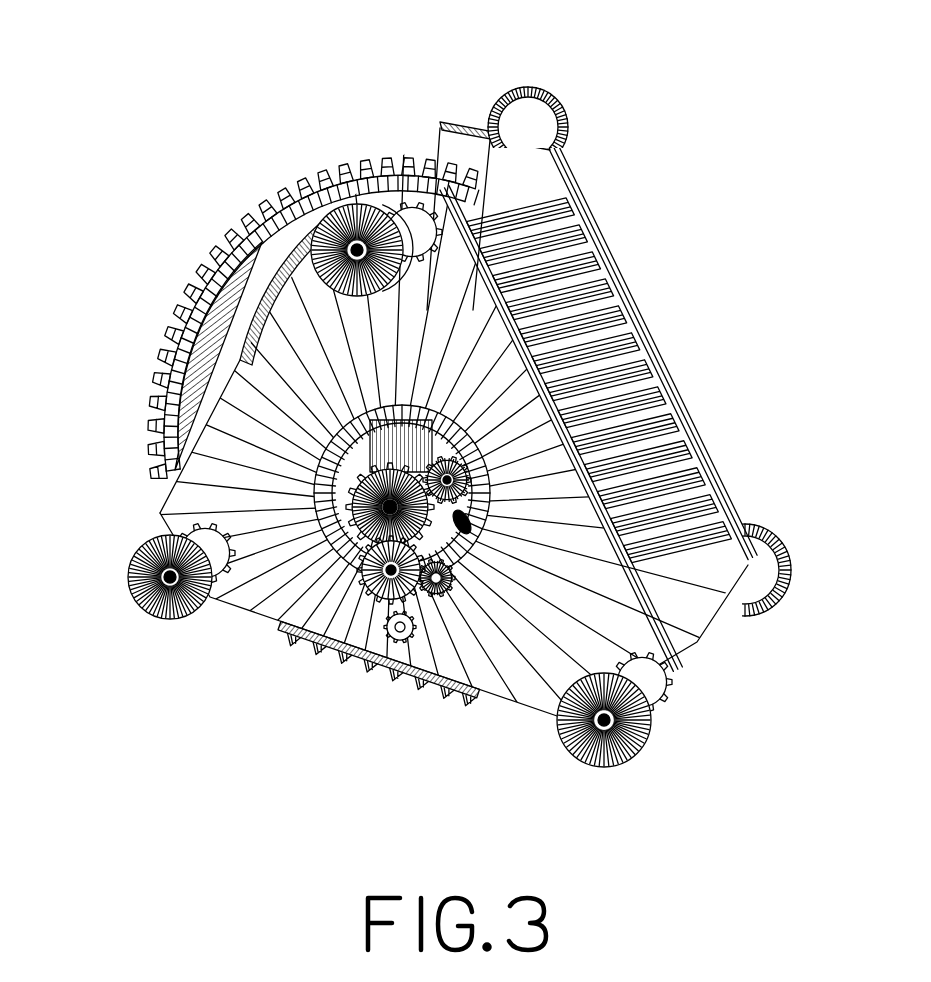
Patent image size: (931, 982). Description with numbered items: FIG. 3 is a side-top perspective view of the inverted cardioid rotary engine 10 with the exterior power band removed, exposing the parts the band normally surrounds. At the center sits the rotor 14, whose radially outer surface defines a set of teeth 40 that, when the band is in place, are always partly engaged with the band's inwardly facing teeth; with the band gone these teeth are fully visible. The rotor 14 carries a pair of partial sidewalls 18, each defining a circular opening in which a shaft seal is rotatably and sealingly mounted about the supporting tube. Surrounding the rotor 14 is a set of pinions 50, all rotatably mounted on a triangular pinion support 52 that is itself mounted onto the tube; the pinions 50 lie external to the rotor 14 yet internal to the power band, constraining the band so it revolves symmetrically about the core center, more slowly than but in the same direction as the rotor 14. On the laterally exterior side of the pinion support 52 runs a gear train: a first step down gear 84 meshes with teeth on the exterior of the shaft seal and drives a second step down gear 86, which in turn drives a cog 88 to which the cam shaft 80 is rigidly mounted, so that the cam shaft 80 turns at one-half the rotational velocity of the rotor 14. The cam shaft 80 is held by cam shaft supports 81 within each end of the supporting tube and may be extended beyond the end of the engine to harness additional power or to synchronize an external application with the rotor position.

The inverted cardioid rotary engine 10 is at (154, 236).
The rotor 14 is at (653, 420).
The partial sidewalls 18 is at (563, 397).
The teeth 40 is at (577, 277).
The pinions 50 is at (327, 208).
The triangular pinion support 52 is at (723, 490).
The cam shaft 80 is at (415, 507).
The cam shaft supports 81 is at (397, 443).
The first step down gear 84 is at (417, 627).
The second step down gear 86 is at (378, 568).
The cog 88 is at (350, 498).